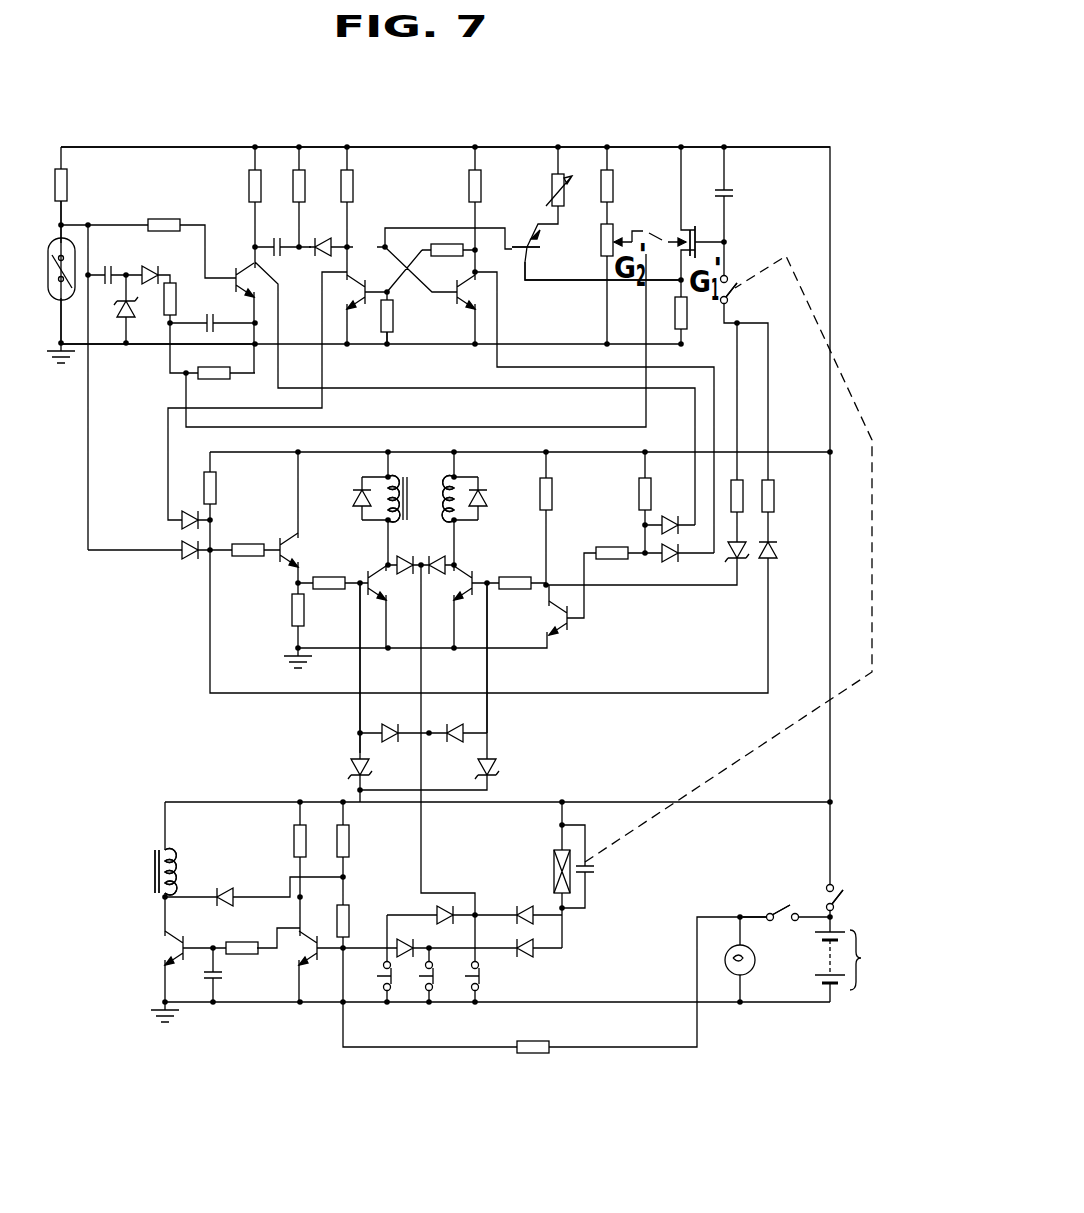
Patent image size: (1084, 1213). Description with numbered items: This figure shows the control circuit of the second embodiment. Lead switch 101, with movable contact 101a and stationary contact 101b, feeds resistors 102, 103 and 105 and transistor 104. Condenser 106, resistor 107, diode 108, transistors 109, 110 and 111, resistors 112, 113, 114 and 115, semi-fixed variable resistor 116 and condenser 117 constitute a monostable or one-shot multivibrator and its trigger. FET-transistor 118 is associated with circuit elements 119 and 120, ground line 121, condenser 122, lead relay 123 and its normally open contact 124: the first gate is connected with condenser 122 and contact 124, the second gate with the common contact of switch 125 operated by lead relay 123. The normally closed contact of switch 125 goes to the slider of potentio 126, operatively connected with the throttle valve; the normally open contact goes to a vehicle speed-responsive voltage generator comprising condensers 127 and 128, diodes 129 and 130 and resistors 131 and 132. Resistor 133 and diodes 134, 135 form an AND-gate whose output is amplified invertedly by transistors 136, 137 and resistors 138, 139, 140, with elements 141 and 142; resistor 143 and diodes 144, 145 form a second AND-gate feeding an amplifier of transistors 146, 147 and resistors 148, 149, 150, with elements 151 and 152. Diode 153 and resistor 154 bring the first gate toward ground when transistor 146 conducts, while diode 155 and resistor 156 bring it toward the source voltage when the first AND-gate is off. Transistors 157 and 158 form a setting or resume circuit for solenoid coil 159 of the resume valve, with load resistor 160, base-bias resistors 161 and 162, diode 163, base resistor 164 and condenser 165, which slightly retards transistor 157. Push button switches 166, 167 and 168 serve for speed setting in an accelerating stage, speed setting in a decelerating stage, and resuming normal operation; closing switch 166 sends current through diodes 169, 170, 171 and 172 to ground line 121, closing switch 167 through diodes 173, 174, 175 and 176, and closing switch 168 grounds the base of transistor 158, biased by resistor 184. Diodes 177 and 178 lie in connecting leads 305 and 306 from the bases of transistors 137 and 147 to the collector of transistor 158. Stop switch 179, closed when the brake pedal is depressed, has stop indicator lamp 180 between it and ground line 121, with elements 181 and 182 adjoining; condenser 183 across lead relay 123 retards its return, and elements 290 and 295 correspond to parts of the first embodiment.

The lead switch 101 is at (54, 272).
The movable contact 101a is at (48, 263).
The stationary contact 101b is at (82, 298).
The resistor 102 is at (70, 186).
The resistor 103 is at (164, 217).
The transistor 104 is at (238, 268).
The resistor 105 is at (258, 180).
The condenser 106 is at (274, 243).
The resistor 107 is at (303, 180).
The diode 108 is at (336, 233).
The transistor 109 is at (356, 302).
The transistor 110 is at (478, 288).
The transistor 111 is at (524, 242).
The resistor 112 is at (352, 200).
The resistor 113 is at (470, 190).
The resistor 114 is at (440, 244).
The resistor 115 is at (392, 334).
The semi-fixed variable resistor 116 is at (550, 180).
The condenser 117 is at (390, 300).
The FET-transistor 118 is at (702, 232).
The circuit element 119 is at (590, 146).
The circuit element 120 is at (690, 318).
The ground line 121 is at (104, 348).
The condenser 122 is at (738, 190).
The lead relay 123 is at (552, 868).
The normally open contact 124 is at (734, 290).
The switch 125 is at (648, 228).
The potentio 126 is at (608, 240).
The condenser 127 is at (106, 268).
The condenser 128 is at (226, 300).
The diode 129 is at (132, 318).
The diode 130 is at (148, 266).
The resistor 131 is at (218, 379).
The resistor 132 is at (180, 268).
The resistor 133 is at (216, 490).
The diode 134 is at (188, 512).
The diode 135 is at (188, 560).
The transistor 136 is at (290, 545).
The transistor 137 is at (396, 600).
The resistor 138 is at (248, 543).
The resistor 139 is at (292, 612).
The resistor 140 is at (330, 590).
The circuit element 141 is at (404, 472).
The circuit element 142 is at (356, 490).
The resistor 143 is at (640, 492).
The diode 144 is at (668, 516).
The diode 145 is at (668, 562).
The transistor 146 is at (548, 620).
The transistor 147 is at (448, 600).
The resistor 148 is at (606, 546).
The resistor 149 is at (553, 494).
The resistor 150 is at (512, 576).
The circuit element 151 is at (438, 472).
The circuit element 152 is at (482, 496).
The diode 153 is at (734, 556).
The resistor 154 is at (742, 482).
The diode 155 is at (775, 552).
The resistor 156 is at (790, 476).
The transistor 157 is at (178, 946).
The transistor 158 is at (312, 956).
The solenoid coil 159 is at (152, 870).
The load resistor 160 is at (296, 840).
The base-bias resistor 161 is at (348, 842).
The base-bias resistor 162 is at (348, 905).
The diode 163 is at (222, 888).
The base resistor 164 is at (242, 942).
The condenser 165 is at (226, 978).
The push button switch 166 is at (484, 985).
The push button switch 167 is at (438, 985).
The push button switch 168 is at (394, 985).
The diode 169 is at (534, 906).
The diode 170 is at (446, 906).
The diode 171 is at (395, 562).
The diode 172 is at (442, 560).
The diode 173 is at (532, 958).
The diode 174 is at (406, 940).
The diode 175 is at (470, 730).
The diode 176 is at (372, 744).
The diode 177 is at (380, 736).
The diode 178 is at (496, 764).
The stop switch 179 is at (786, 908).
The stop indicator lamp 180 is at (752, 968).
The circuit element 181 is at (864, 884).
The circuit element 182 is at (862, 958).
The condenser 183 is at (598, 868).
The bias resistor 184 is at (536, 1054).
The corresponding element 290 is at (832, 750).
The corresponding element 295 is at (602, 285).
The connecting lead 305 is at (358, 710).
The connecting lead 306 is at (490, 692).